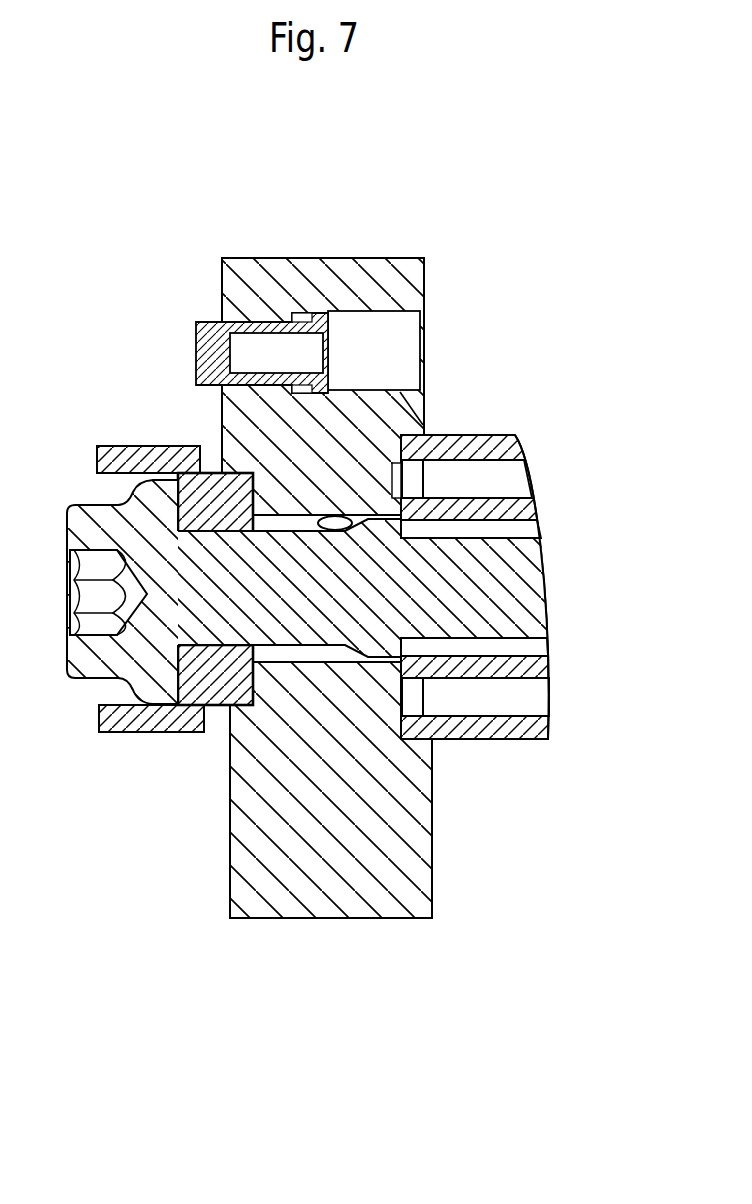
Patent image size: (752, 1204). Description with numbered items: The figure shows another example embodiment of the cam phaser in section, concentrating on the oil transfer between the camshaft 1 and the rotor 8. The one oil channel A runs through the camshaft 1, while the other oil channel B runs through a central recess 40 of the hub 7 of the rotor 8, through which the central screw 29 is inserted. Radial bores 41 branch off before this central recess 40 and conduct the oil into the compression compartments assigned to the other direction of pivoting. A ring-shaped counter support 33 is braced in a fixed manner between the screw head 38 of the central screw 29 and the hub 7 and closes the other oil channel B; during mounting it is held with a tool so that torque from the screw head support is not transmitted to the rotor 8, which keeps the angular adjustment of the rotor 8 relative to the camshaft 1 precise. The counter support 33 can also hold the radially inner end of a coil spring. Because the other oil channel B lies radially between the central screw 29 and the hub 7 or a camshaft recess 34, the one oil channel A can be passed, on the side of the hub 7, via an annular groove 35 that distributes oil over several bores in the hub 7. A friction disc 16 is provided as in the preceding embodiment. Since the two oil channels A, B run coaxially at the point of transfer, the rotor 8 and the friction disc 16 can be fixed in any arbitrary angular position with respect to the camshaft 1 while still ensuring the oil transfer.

The camshaft 1 is at (525, 434).
The hub 7 is at (262, 880).
The rotor 8 is at (237, 292).
The friction disc 16 is at (455, 478).
The central screw 29 is at (387, 592).
The ring-shaped counter support 33 is at (163, 457).
The camshaft recess 34 is at (486, 650).
The annular groove 35 is at (412, 485).
The screw head 38 is at (108, 670).
The central recess 40 is at (372, 523).
The radial bores 41 is at (330, 524).
The oil channel A is at (468, 460).
The oil channel B is at (367, 652).